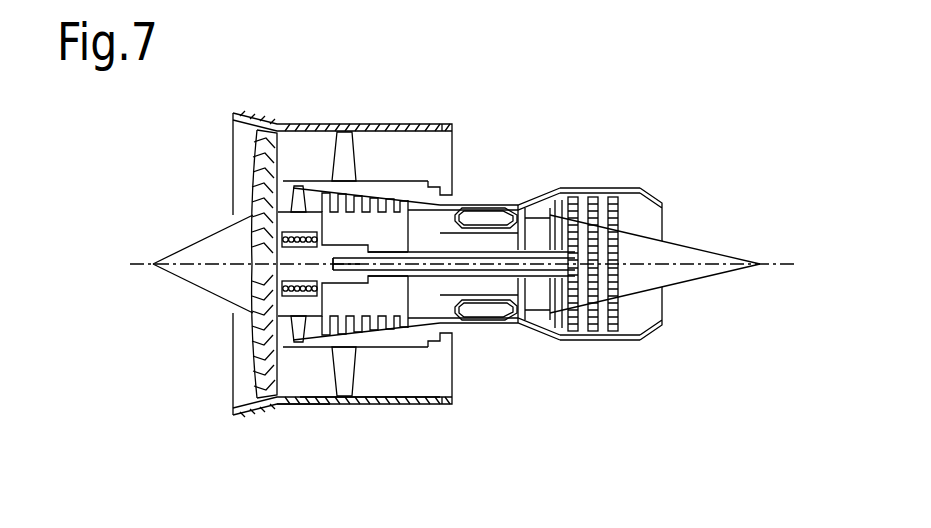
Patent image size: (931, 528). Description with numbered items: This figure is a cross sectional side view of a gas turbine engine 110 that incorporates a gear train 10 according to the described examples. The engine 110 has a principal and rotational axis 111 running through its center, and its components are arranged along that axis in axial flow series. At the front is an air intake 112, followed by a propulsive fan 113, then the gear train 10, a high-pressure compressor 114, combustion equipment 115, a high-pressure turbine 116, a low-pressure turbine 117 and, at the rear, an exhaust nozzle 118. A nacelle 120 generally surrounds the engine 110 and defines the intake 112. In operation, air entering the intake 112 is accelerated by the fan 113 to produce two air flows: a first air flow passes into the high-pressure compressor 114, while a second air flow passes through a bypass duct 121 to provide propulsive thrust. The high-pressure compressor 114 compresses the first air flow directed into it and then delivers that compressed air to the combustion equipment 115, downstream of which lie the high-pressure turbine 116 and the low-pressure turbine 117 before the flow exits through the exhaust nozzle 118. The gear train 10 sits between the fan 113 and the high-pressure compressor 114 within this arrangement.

The gas turbine engine 110 is at (512, 158).
The principal and rotational axis 111 is at (146, 262).
The air intake 112 is at (233, 165).
The propulsive fan 113 is at (267, 130).
The high-pressure compressor 114 is at (376, 222).
The combustion equipment 115 is at (483, 218).
The high-pressure turbine 116 is at (556, 205).
The low-pressure turbine 117 is at (619, 190).
The exhaust nozzle 118 is at (648, 221).
The nacelle 120 is at (297, 402).
The bypass duct 121 is at (392, 378).
The gear train 10 is at (353, 270).